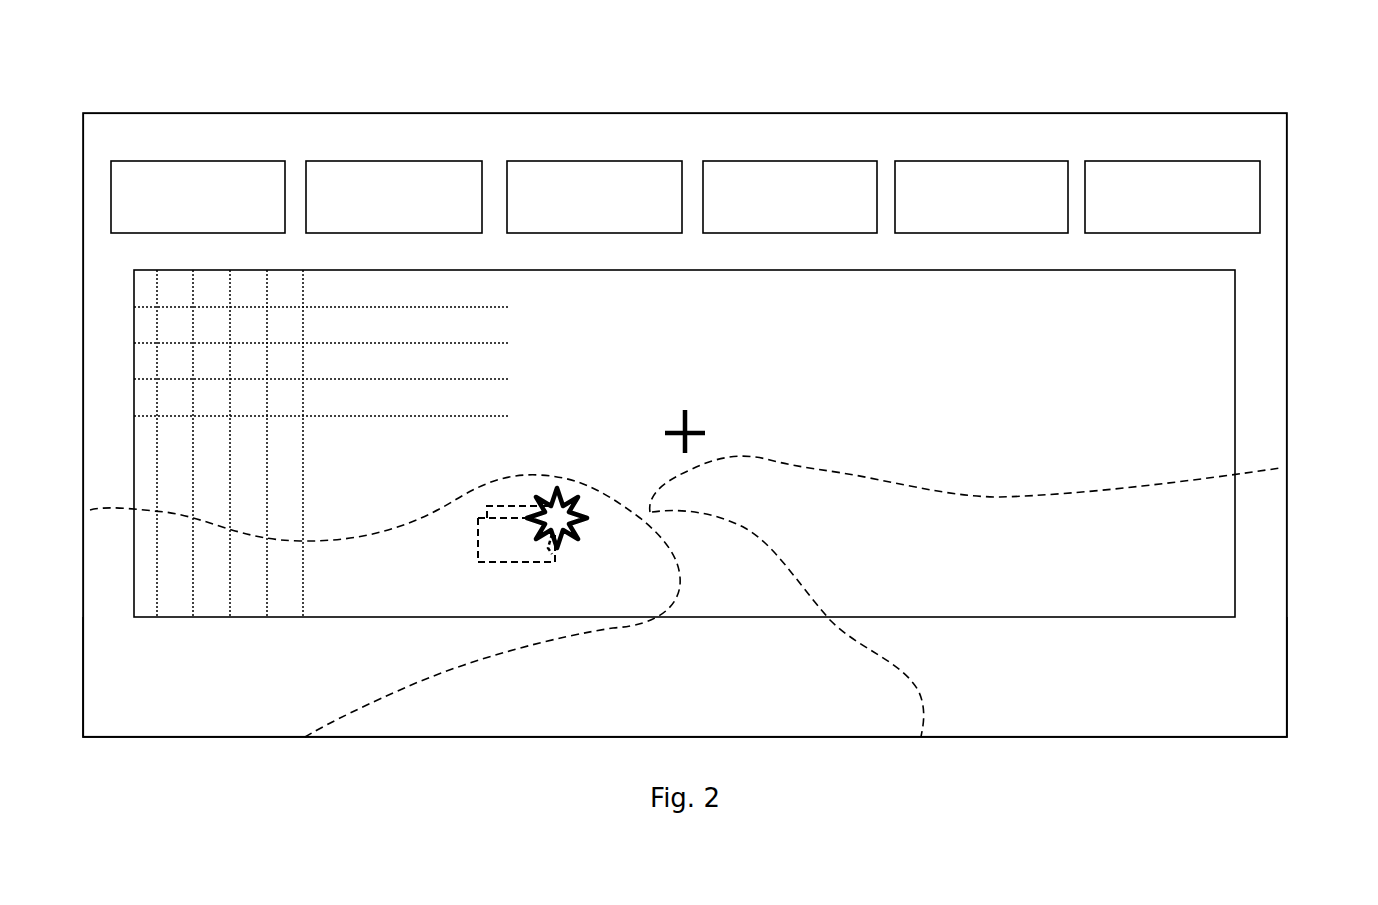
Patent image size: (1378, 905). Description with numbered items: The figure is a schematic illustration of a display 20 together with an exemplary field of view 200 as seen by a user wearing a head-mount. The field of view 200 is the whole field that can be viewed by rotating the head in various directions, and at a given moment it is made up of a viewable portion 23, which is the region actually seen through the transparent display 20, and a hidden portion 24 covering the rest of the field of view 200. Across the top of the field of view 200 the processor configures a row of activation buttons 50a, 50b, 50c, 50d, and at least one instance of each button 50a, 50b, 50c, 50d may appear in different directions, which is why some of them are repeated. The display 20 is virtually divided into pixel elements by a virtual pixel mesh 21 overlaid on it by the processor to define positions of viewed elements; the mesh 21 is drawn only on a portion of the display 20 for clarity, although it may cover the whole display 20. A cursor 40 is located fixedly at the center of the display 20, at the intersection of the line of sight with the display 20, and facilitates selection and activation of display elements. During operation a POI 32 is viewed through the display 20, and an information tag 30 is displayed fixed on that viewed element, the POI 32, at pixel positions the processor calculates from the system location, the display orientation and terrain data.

The field of view 200 is at (916, 93).
The display 20 is at (1227, 370).
The virtual pixel mesh 21 is at (485, 362).
The viewable portion 23 is at (684, 443).
The hidden portion 24 is at (685, 677).
The information tag 30 is at (557, 490).
The POI 32 is at (480, 540).
The cursor 40 is at (685, 410).
The activation button 50a is at (589, 197).
The activation button 50b is at (790, 197).
The activation button 50c is at (594, 197).
The activation button 50d is at (783, 197).